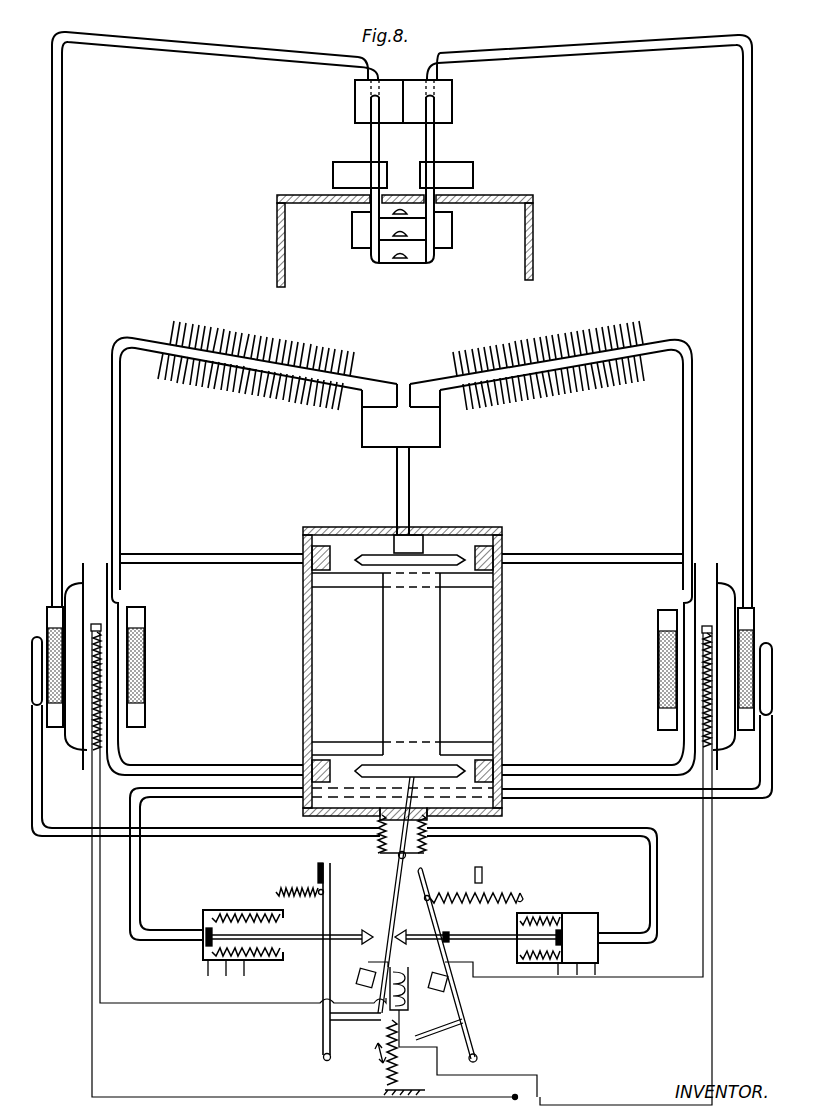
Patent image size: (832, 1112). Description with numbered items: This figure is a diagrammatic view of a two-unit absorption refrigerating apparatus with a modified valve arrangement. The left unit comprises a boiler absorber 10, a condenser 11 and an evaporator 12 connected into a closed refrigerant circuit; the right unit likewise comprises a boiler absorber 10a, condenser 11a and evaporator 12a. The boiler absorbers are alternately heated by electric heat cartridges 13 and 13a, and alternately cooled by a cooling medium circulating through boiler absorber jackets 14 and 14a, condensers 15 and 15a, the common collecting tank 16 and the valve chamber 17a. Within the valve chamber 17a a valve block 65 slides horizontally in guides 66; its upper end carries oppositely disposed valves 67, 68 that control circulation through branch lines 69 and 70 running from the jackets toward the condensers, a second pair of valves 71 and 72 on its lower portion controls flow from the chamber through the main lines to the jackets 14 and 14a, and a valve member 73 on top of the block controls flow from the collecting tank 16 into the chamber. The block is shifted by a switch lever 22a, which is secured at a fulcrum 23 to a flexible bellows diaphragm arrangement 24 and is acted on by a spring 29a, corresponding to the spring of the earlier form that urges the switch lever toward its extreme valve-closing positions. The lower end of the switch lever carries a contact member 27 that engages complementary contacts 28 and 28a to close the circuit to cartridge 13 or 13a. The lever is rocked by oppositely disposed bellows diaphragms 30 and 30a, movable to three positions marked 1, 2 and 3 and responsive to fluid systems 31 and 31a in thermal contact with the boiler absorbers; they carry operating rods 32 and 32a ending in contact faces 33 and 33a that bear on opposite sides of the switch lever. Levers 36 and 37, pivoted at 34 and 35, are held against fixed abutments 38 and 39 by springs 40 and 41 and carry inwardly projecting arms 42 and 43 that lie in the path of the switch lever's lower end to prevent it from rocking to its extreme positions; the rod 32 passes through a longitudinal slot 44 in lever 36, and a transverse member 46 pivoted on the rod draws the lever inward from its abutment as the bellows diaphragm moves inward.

The condenser 11 is at (355, 103).
The condenser 11a is at (452, 103).
The evaporator 12 is at (333, 168).
The evaporator 12a is at (473, 170).
The condenser 15 is at (285, 352).
The condenser 15a is at (560, 352).
The common collecting tank 16 is at (440, 427).
The valve chamber 17a is at (502, 648).
The valve member 73 is at (421, 545).
The valve 68 is at (372, 562).
The valve 67 is at (462, 556).
The guides 66 is at (347, 638).
The valve block 65 is at (440, 662).
The valve 72 is at (366, 765).
The valve 71 is at (462, 763).
The branch line 70 is at (196, 554).
The branch line 69 is at (565, 554).
The boiler absorber jacket 14 is at (118, 604).
The electric heat cartridge 13 is at (301, 848).
The boiler absorber 10 is at (146, 652).
The fluid system 31 is at (34, 650).
The boiler absorber jacket 14a is at (684, 606).
The electric heat cartridge 13a is at (703, 728).
The boiler absorber 10a is at (658, 656).
The fluid system 31a is at (770, 650).
The bellows diaphragm 30a is at (205, 918).
The bellows diaphragm 30 is at (576, 920).
The position 1 is at (209, 987).
The position 2 is at (226, 987).
The position 3 is at (244, 987).
The operating rod 32a is at (295, 934).
The contact face 33a is at (372, 932).
The operating rod 32 is at (487, 935).
The contact face 33 is at (399, 932).
The lever 37 is at (323, 981).
The fixed abutment 39 is at (318, 870).
The spring 41 is at (290, 888).
The pivot 35 is at (323, 1057).
The arm 43 is at (352, 1021).
The fulcrum 23 is at (398, 857).
The flexible bellows diaphragm arrangement 24 is at (428, 853).
The switch lever 22a is at (398, 888).
The lever 36 is at (466, 999).
The pivot 34 is at (478, 1058).
The spring 40 is at (492, 896).
The fixed abutment 38 is at (484, 877).
The longitudinal slot 44 is at (427, 929).
The transverse member 46 is at (440, 932).
The complementary contact member 28a is at (360, 972).
The contact member 27 is at (463, 1022).
The complementary contact member 28 is at (434, 988).
The arm 42 is at (442, 1033).
The spring 29a is at (388, 1082).